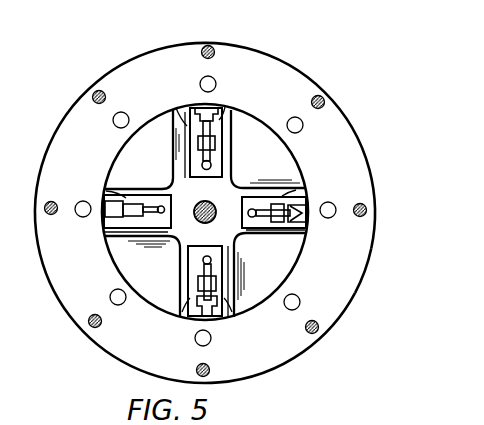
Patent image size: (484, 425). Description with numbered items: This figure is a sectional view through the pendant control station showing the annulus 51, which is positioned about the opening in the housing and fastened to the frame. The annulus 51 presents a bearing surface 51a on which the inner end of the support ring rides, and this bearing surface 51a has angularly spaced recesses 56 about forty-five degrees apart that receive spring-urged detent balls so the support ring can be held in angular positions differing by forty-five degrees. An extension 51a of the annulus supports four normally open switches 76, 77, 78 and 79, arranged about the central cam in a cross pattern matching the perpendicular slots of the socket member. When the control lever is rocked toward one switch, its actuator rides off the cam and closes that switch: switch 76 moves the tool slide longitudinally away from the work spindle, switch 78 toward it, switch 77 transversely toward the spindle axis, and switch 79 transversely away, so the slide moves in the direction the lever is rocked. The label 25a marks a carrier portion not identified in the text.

The annulus 51 is at (278, 58).
The bearing surface 51a is at (335, 288).
The recesses 56 is at (216, 77).
The cross-shaped carrier 25a is at (284, 181).
The limit switch 76 is at (104, 200).
The switch 77 is at (198, 310).
The switch 78 is at (312, 206).
The switch 79 is at (216, 104).